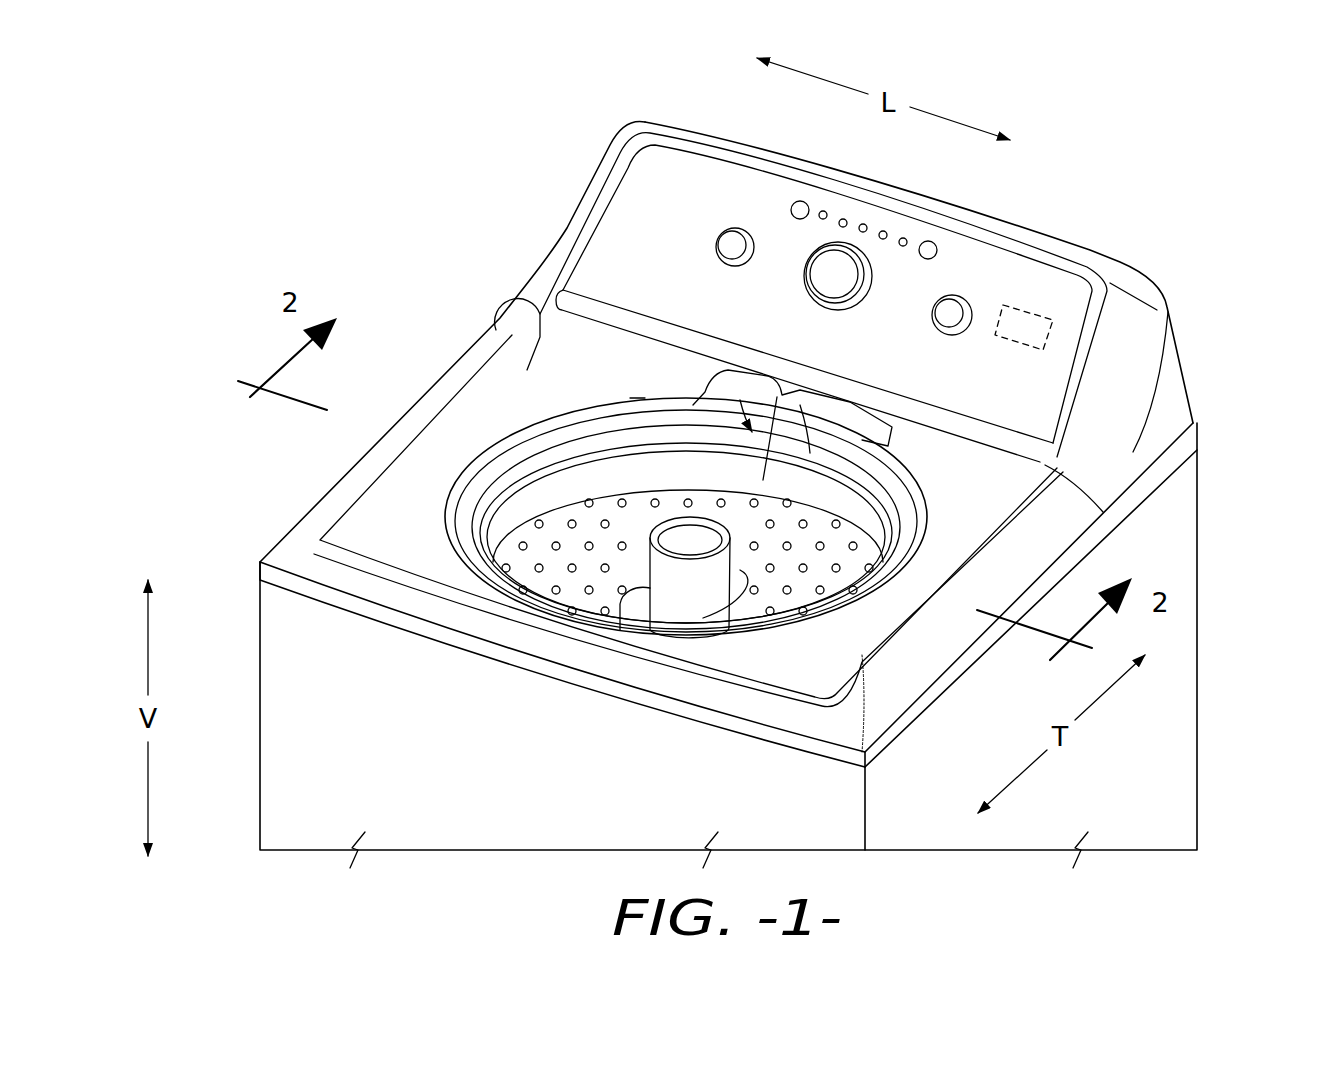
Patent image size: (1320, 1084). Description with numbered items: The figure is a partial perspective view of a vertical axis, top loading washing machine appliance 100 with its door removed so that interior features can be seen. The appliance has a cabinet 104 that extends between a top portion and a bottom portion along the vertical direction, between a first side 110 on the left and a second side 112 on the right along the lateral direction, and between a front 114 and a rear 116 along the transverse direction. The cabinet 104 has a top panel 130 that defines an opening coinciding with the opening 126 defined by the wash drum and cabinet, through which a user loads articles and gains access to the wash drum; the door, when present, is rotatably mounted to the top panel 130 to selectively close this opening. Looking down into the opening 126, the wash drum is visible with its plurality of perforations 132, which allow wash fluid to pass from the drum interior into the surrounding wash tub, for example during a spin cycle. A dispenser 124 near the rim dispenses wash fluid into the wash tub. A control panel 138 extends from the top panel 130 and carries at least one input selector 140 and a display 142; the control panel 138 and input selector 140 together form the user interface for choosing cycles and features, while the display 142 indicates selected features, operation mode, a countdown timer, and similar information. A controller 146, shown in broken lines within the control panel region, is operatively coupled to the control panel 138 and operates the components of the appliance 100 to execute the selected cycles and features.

The vertical axis washing appliance 100 is at (1162, 160).
The cabinet 104 is at (1187, 498).
The first side 110 is at (313, 480).
The second side 112 is at (1122, 547).
The front 114 is at (243, 565).
The rear 116 is at (508, 276).
The dispenser 124 is at (827, 400).
The opening 126 is at (520, 478).
The top panel 130 is at (995, 567).
The perforations 132 is at (597, 520).
The control panel 138 is at (997, 268).
The input selector 140 is at (826, 272).
The display 142 is at (945, 245).
The controller 146 is at (1027, 325).